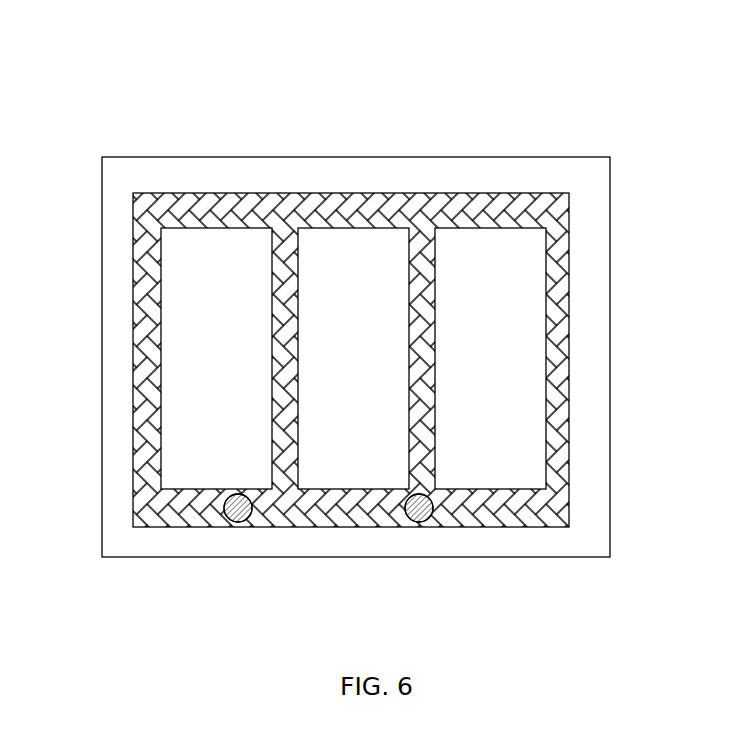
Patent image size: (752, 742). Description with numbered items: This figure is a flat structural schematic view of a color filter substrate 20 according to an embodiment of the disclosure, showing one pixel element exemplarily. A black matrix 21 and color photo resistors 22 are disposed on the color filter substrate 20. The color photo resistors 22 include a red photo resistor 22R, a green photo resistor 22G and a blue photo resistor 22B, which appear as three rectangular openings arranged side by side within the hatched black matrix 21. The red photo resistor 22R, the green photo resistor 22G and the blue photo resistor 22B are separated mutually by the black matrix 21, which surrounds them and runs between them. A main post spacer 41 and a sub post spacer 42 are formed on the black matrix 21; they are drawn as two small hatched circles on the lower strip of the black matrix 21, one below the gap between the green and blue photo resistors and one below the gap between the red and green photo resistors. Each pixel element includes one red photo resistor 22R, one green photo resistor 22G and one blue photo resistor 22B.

The substrate 20 is at (596, 284).
The black matrix 21 is at (143, 332).
The color photo resistors 22 is at (353, 265).
The red photo resistor 22R is at (215, 267).
The green photo resistor 22G is at (353, 275).
The blue photo resistor 22B is at (485, 275).
The main post spacer 41 is at (423, 523).
The sub post spacer 42 is at (233, 518).